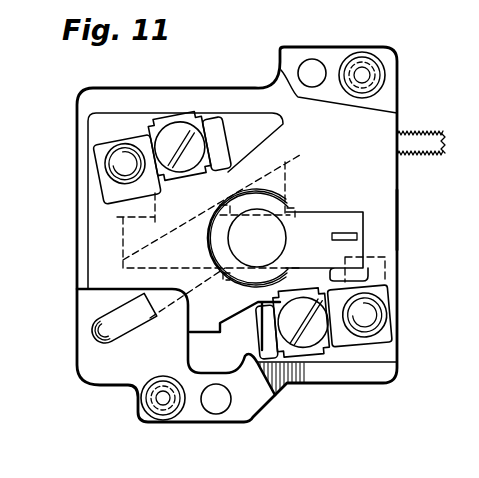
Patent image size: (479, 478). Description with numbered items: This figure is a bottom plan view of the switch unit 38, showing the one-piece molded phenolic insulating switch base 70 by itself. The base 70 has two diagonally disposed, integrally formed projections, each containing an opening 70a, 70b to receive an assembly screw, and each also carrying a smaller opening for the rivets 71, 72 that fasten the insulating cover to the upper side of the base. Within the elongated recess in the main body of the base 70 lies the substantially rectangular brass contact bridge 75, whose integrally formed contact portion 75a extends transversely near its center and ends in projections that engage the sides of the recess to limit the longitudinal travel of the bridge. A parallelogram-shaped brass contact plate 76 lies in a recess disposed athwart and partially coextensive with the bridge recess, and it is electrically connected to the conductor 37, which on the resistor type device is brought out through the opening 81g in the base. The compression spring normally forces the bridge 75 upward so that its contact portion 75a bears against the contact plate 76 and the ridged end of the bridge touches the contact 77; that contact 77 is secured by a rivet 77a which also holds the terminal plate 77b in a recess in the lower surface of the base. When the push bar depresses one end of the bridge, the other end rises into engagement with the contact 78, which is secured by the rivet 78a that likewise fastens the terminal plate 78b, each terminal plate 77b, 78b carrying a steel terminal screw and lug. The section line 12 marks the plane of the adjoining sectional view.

The section line 12 is at (270, 3).
The conductor 37 is at (426, 133).
The switch unit 38 is at (410, 220).
The switch base 70 is at (397, 174).
The opening 70a is at (318, 66).
The opening 70b is at (214, 410).
The rivet 71 is at (160, 412).
The rivet 72 is at (374, 68).
The contact bridge 75 is at (330, 222).
The contact portion 75a is at (224, 282).
The contact plate 76 is at (300, 157).
The contact 77 is at (385, 262).
The rivet 77a is at (377, 316).
The terminal plate 77b is at (393, 341).
The contact 78 is at (118, 207).
The rivet 78a is at (108, 160).
The terminal plate 78b is at (145, 135).
The opening 81g is at (97, 328).